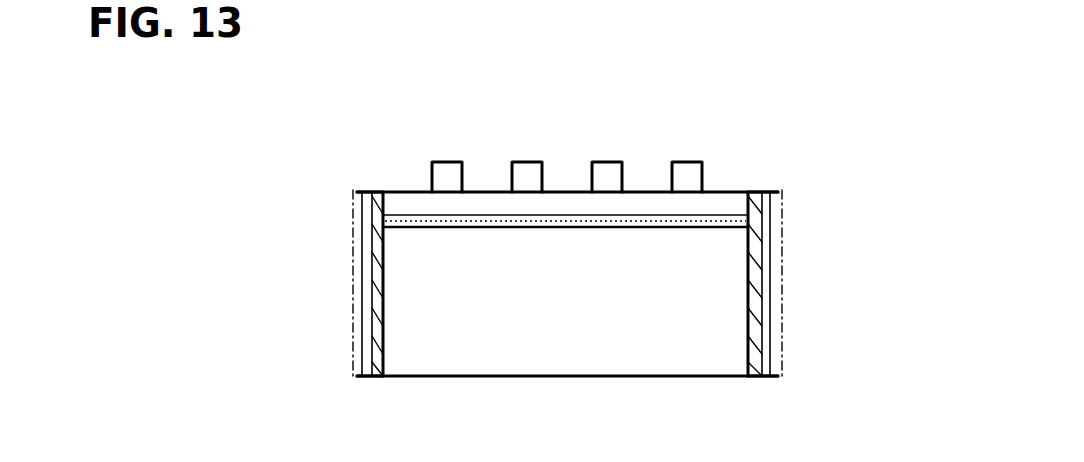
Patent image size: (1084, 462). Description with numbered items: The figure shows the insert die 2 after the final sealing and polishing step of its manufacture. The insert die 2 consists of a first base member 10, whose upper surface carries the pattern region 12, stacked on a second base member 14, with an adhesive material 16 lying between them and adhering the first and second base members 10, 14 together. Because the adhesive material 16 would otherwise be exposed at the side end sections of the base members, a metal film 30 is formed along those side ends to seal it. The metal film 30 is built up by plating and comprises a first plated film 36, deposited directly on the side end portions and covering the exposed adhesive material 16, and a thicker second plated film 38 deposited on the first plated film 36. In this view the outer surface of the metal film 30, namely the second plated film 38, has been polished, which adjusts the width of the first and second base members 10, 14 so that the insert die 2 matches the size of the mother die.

The insert die 2 is at (759, 130).
The first base member 10 is at (726, 203).
The pattern region 12 is at (722, 148).
The second base member 14 is at (730, 337).
The adhesive material 16 is at (750, 227).
The metal film 30 is at (268, 243).
The first plated film 36 is at (375, 273).
The second plated film 38 is at (365, 312).